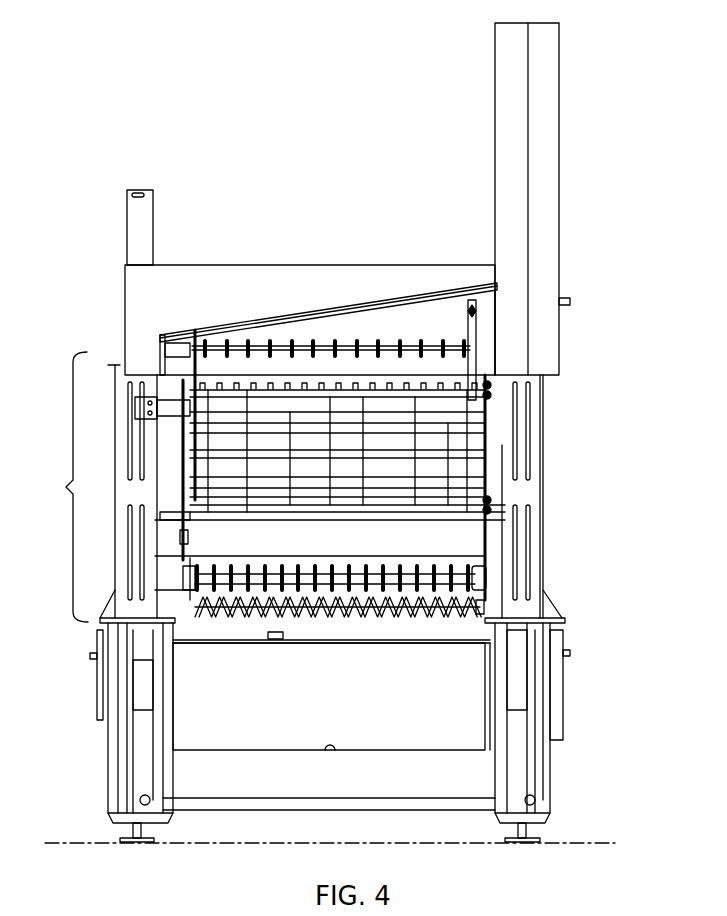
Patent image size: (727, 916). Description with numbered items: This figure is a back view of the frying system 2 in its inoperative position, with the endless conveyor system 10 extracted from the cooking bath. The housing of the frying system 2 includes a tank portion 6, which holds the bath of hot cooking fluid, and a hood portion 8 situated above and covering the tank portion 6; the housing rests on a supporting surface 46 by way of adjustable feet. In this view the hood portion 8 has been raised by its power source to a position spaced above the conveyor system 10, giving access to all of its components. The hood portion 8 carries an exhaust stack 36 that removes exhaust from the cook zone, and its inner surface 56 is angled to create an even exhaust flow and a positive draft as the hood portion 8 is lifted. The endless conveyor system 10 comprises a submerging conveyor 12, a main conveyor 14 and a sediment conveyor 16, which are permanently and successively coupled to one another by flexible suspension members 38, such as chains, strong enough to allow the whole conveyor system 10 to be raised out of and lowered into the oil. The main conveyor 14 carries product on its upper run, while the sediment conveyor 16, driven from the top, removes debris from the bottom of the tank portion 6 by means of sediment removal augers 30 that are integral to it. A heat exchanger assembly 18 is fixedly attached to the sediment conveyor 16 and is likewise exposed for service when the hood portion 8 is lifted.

The frying system 2 is at (592, 226).
The tank portion 6 is at (340, 707).
The hood portion 8 is at (311, 265).
The endless conveyor system 10 is at (301, 487).
The submerging conveyor 12 is at (487, 388).
The main conveyor 14 is at (480, 455).
The sediment conveyor 16 is at (488, 580).
The heat exchanger assembly 18 is at (408, 567).
The sediment removal auger 30 is at (458, 607).
The exhaust stack 36 is at (497, 154).
The flexible suspension members 38 is at (489, 386).
The supporting surface 46 is at (67, 842).
The inner surface of the hood 56 is at (331, 308).